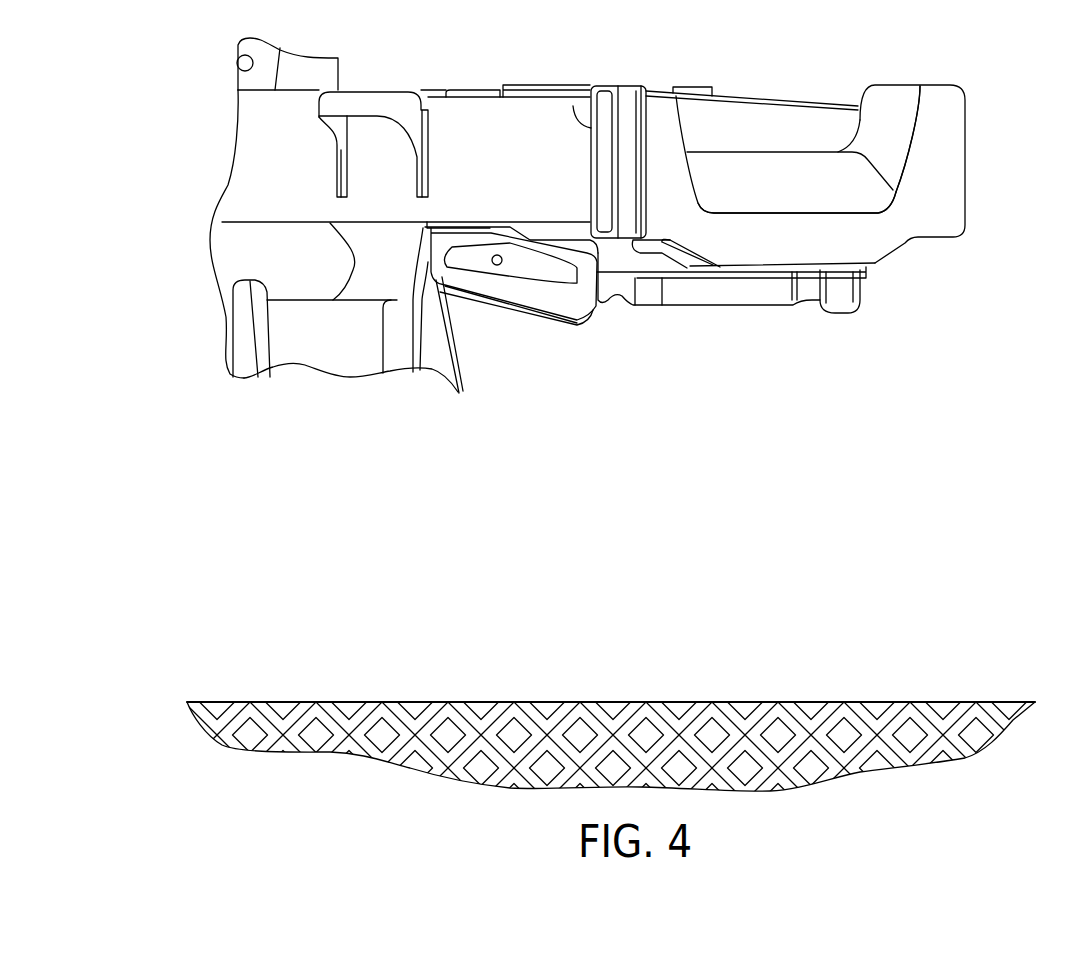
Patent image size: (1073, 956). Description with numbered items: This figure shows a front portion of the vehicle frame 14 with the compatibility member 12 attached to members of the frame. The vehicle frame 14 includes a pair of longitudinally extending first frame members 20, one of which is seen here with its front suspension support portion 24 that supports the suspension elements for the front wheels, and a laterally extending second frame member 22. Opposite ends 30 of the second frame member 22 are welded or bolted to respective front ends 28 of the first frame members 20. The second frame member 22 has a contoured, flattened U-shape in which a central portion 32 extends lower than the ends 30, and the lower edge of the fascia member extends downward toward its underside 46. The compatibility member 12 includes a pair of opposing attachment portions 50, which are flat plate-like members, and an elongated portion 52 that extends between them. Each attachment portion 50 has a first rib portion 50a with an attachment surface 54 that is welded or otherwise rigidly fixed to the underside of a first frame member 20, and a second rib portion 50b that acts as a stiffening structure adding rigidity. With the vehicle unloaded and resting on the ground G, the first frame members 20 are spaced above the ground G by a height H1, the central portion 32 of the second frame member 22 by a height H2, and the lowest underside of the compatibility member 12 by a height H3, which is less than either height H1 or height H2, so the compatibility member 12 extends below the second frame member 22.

The compatibility member 12 is at (623, 355).
The vehicle frame 14 is at (815, 51).
The first frame member 20 is at (530, 128).
The second frame member 22 is at (937, 172).
The front suspension support portion 24 is at (371, 104).
The front end 28 is at (573, 106).
The end 30 is at (591, 182).
The central portion 32 is at (792, 240).
The underside 46 is at (822, 267).
The attachment portion 50 is at (492, 287).
The first rib portion 50a is at (455, 223).
The second rib portion 50b is at (527, 320).
The elongated portion 52 is at (755, 287).
The attachment surface 54 is at (479, 225).
The ground G is at (992, 702).
The height H1 is at (396, 236).
The height H2 is at (932, 265).
The height H3 is at (718, 330).